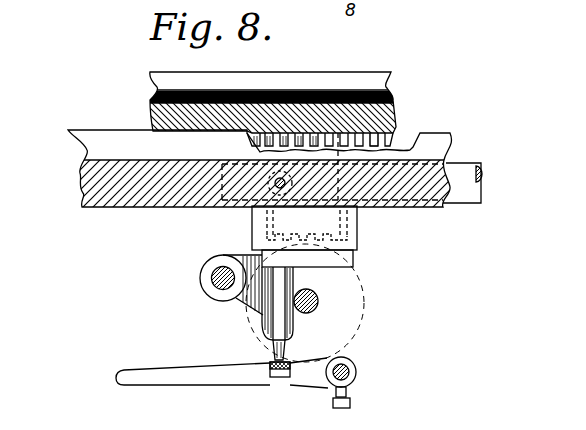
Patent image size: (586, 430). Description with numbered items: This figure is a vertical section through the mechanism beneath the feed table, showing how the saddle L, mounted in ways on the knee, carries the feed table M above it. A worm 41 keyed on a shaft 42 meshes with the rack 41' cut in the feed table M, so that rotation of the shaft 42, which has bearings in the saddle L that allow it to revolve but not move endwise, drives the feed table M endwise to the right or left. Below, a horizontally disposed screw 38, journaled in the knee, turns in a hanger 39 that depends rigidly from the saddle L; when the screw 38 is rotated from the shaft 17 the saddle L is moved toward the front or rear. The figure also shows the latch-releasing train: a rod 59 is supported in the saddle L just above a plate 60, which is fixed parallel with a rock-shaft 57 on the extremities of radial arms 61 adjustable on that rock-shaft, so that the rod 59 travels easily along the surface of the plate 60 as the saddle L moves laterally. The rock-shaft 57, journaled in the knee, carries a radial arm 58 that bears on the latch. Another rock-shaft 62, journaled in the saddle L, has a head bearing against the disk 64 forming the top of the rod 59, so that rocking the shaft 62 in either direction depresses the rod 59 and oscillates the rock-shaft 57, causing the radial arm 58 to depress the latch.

The feed table M is at (285, 72).
The worm 41 is at (320, 121).
The rack 41' is at (408, 122).
The saddle L is at (429, 207).
The shaft 42 is at (470, 187).
The rock-shaft 62 is at (280, 190).
The disk 64 is at (312, 207).
The rod 59 is at (285, 343).
The shaft 17 is at (318, 300).
The screw 38 is at (211, 275).
The hanger 39 is at (237, 306).
The radial arm 58 is at (220, 375).
The plate 60 is at (278, 378).
The radial arms 61 is at (320, 379).
The rock-shaft 57 is at (352, 372).